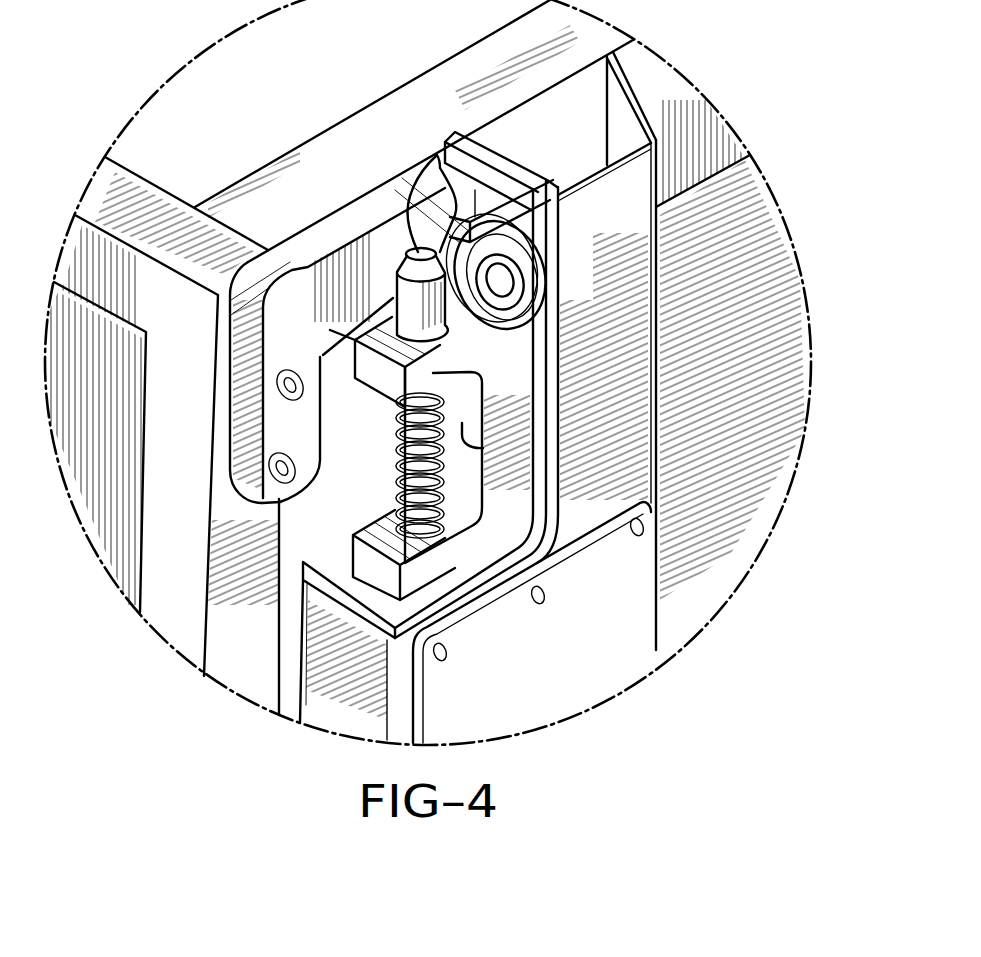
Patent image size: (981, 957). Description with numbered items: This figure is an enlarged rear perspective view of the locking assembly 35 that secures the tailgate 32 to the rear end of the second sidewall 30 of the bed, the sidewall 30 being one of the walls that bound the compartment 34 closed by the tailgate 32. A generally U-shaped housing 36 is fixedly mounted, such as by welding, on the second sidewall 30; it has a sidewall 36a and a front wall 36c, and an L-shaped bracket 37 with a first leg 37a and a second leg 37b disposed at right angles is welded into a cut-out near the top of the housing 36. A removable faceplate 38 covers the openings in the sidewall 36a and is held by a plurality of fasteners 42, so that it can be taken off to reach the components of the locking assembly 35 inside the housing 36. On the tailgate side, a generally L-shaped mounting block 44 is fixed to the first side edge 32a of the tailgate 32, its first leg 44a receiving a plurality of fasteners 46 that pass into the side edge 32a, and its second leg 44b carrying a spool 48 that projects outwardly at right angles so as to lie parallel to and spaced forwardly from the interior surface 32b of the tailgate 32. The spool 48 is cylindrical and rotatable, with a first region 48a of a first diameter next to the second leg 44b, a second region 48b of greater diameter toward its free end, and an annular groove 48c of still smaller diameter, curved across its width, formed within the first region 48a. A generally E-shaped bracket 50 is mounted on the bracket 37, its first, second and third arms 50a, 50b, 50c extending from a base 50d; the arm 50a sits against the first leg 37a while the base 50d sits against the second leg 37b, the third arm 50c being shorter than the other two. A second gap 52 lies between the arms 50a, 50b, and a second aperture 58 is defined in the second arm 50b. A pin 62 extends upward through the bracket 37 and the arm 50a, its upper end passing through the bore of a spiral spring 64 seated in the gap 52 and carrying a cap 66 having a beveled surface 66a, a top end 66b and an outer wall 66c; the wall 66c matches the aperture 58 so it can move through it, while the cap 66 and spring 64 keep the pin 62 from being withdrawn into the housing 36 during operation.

The second sidewall 30 is at (371, 99).
The tailgate 32 is at (168, 597).
The first side edge of tailgate 32a is at (243, 668).
The interior surface of tailgate 32b is at (160, 186).
The compartment 34 is at (214, 97).
The locking assembly 35 is at (319, 356).
The housing 36 is at (658, 228).
The sidewall of housing 36a is at (593, 210).
The front wall of housing 36c is at (600, 112).
The L-shaped bracket 37 is at (325, 601).
The first leg of bracket 37a is at (370, 600).
The second leg of bracket 37b is at (553, 487).
The faceplate 38 is at (598, 558).
The fasteners 42 is at (650, 527).
The mounting block 44 is at (248, 265).
The first leg of mounting block 44a is at (284, 426).
The second leg of mounting block 44b is at (414, 240).
The fasteners 46 is at (278, 381).
The spool 48 is at (510, 330).
The first region of spool 48a is at (461, 254).
The second region of spool 48b is at (513, 306).
The annular groove 48c is at (450, 242).
The E-shaped bracket 50 is at (484, 557).
The first arm of E-shaped bracket 50a is at (478, 568).
The second arm of E-shaped bracket 50b is at (433, 374).
The third arm of E-shaped bracket 50c is at (488, 222).
The base of E-shaped bracket 50d is at (527, 461).
The second gap 52 is at (483, 448).
The second aperture 58 is at (437, 337).
The pin 62 is at (395, 530).
The spiral spring 64 is at (397, 487).
The cap 66 is at (398, 298).
The beveled surface of cap 66a is at (382, 250).
The top end of cap 66b is at (436, 165).
The outer wall of cap 66c is at (324, 219).